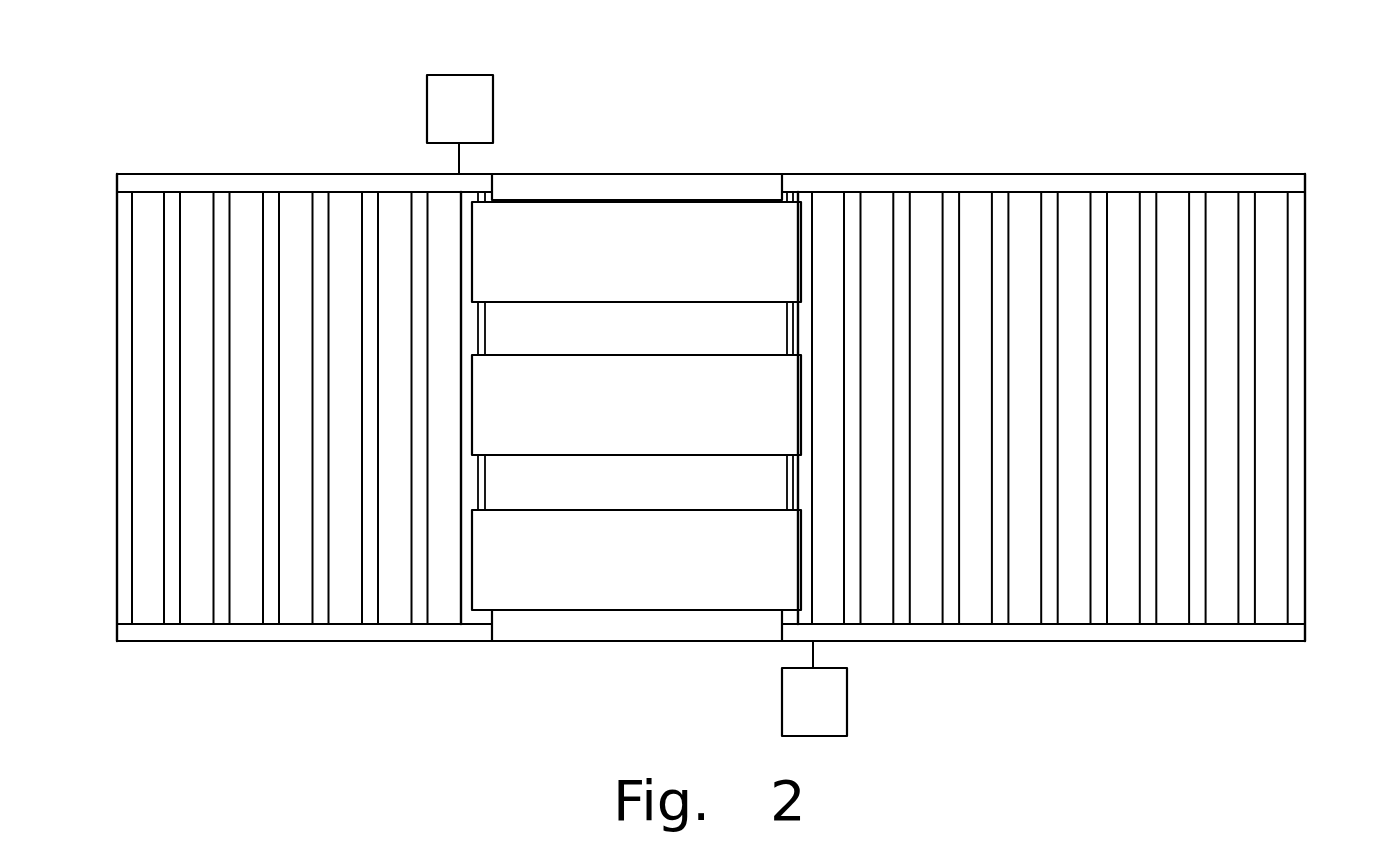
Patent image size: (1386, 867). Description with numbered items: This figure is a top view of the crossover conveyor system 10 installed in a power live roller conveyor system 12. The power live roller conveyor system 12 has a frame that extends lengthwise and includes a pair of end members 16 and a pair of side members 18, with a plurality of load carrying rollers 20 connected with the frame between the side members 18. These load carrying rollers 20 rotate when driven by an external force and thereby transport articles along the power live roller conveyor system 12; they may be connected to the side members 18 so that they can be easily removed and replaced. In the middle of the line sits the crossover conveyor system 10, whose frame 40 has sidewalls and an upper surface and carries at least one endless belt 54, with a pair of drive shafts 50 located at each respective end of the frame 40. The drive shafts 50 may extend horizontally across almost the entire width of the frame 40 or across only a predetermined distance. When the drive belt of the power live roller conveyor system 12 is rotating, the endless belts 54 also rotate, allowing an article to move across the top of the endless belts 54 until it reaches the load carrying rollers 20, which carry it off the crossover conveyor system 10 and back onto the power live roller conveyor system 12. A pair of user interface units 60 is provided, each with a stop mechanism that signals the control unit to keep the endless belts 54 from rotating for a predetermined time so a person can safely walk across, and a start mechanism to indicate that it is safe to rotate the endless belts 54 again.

The crossover conveyor system 10 is at (622, 157).
The power live roller conveyor system 12 is at (243, 156).
The end members 16 is at (117, 381).
The side members 18 is at (1118, 180).
The load carrying rollers 20 is at (202, 212).
The frame 40 is at (735, 185).
The drive shafts 50 is at (483, 330).
The endless belts 54 is at (619, 267).
The user interface units 60 is at (458, 75).